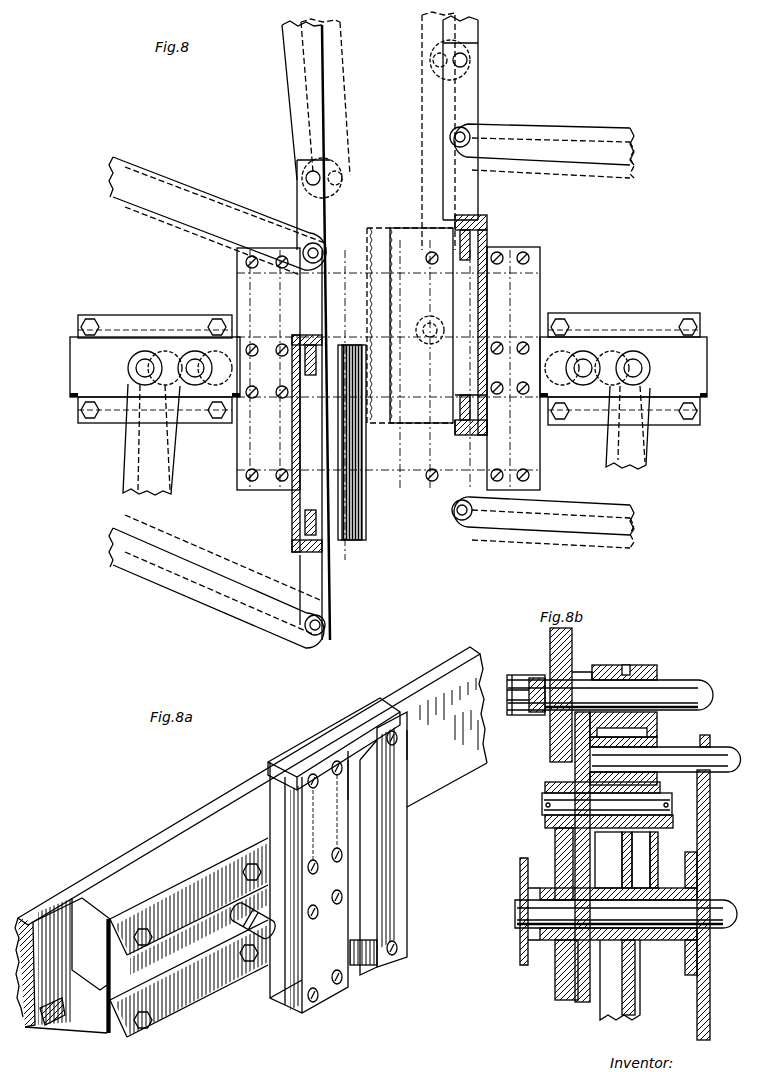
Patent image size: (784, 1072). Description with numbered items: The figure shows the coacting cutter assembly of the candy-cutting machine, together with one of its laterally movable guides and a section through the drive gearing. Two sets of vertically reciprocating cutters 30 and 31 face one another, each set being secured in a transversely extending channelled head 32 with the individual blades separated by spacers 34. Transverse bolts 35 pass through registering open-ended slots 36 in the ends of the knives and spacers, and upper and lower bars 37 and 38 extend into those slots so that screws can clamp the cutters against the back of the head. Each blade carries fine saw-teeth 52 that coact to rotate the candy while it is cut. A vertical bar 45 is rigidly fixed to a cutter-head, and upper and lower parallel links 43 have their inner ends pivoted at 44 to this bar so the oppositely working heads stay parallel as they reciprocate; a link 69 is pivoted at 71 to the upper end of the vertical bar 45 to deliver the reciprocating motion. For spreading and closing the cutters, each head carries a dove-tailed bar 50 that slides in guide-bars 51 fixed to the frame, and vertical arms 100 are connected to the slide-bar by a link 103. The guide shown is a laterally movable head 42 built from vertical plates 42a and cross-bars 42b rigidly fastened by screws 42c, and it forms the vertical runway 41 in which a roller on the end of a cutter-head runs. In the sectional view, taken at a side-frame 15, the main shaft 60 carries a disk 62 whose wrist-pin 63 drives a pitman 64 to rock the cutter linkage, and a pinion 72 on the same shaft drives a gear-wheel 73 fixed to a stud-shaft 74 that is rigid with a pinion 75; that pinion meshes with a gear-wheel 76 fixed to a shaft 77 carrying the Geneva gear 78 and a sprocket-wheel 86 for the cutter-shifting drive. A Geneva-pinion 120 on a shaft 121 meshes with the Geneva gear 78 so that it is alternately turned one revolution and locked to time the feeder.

In FIG. 8B, the side-frame 15 is at (605, 1010).
In FIG. 8, the cutter 30 is at (410, 325).
In FIG. 8, the cutter 31 is at (365, 540).
In FIG. 8, the channelled head 32 is at (487, 240).
In FIG. 8, the spacer 34 is at (540, 290).
In FIG. 8, the bolt 35 is at (300, 340).
In FIG. 8, the slot 36 is at (480, 235).
In FIG. 8, the upper bar 37 is at (470, 225).
In FIG. 8, the lower bar 38 is at (470, 430).
In FIG. 8A, the vertical runway 41 is at (376, 865).
In FIG. 8A, the laterally movable head 42 is at (400, 835).
In FIG. 8A, the vertical plate 42a is at (410, 925).
In FIG. 8A, the cross-bar 42b is at (340, 730).
In FIG. 8A, the screw 42c is at (285, 770).
In FIG. 8, the parallel link 43 is at (182, 213).
In FIG. 8, the pivot 44 is at (325, 248).
In FIG. 8, the vertical bar 45 is at (297, 205).
In FIG. 8, the dove-tailed bar 50 is at (72, 355).
In FIG. 8A, the dove-tailed bar 50 is at (205, 945).
In FIG. 8, the guide-bar 51 is at (172, 320).
In FIG. 8A, the guide-bar 51 is at (197, 880).
In FIG. 8, the saw-teeth 52 is at (366, 528).
In FIG. 8B, the shaft 60 is at (665, 688).
In FIG. 8B, the disk 62 is at (550, 748).
In FIG. 8B, the wrist-pin 63 is at (507, 690).
In FIG. 8B, the pitman 64 is at (536, 678).
In FIG. 8, the link 69 is at (316, 90).
In FIG. 8, the pivot 71 is at (322, 175).
In FIG. 8B, the pinion 72 is at (582, 668).
In FIG. 8B, the gear-wheel 73 is at (575, 775).
In FIG. 8B, the stud-shaft 74 is at (560, 803).
In FIG. 8B, the pinion 75 is at (557, 828).
In FIG. 8B, the gear-wheel 76 is at (565, 978).
In FIG. 8B, the shaft 77 is at (722, 928).
In FIG. 8B, the Geneva gear 78 is at (710, 1005).
In FIG. 8B, the sprocket-wheel 86 is at (520, 950).
In FIG. 8, the vertical arm 100 is at (148, 468).
In FIG. 8, the link 103 is at (172, 400).
In FIG. 8B, the Geneva-pinion 120 is at (712, 745).
In FIG. 8B, the shaft 121 is at (668, 755).